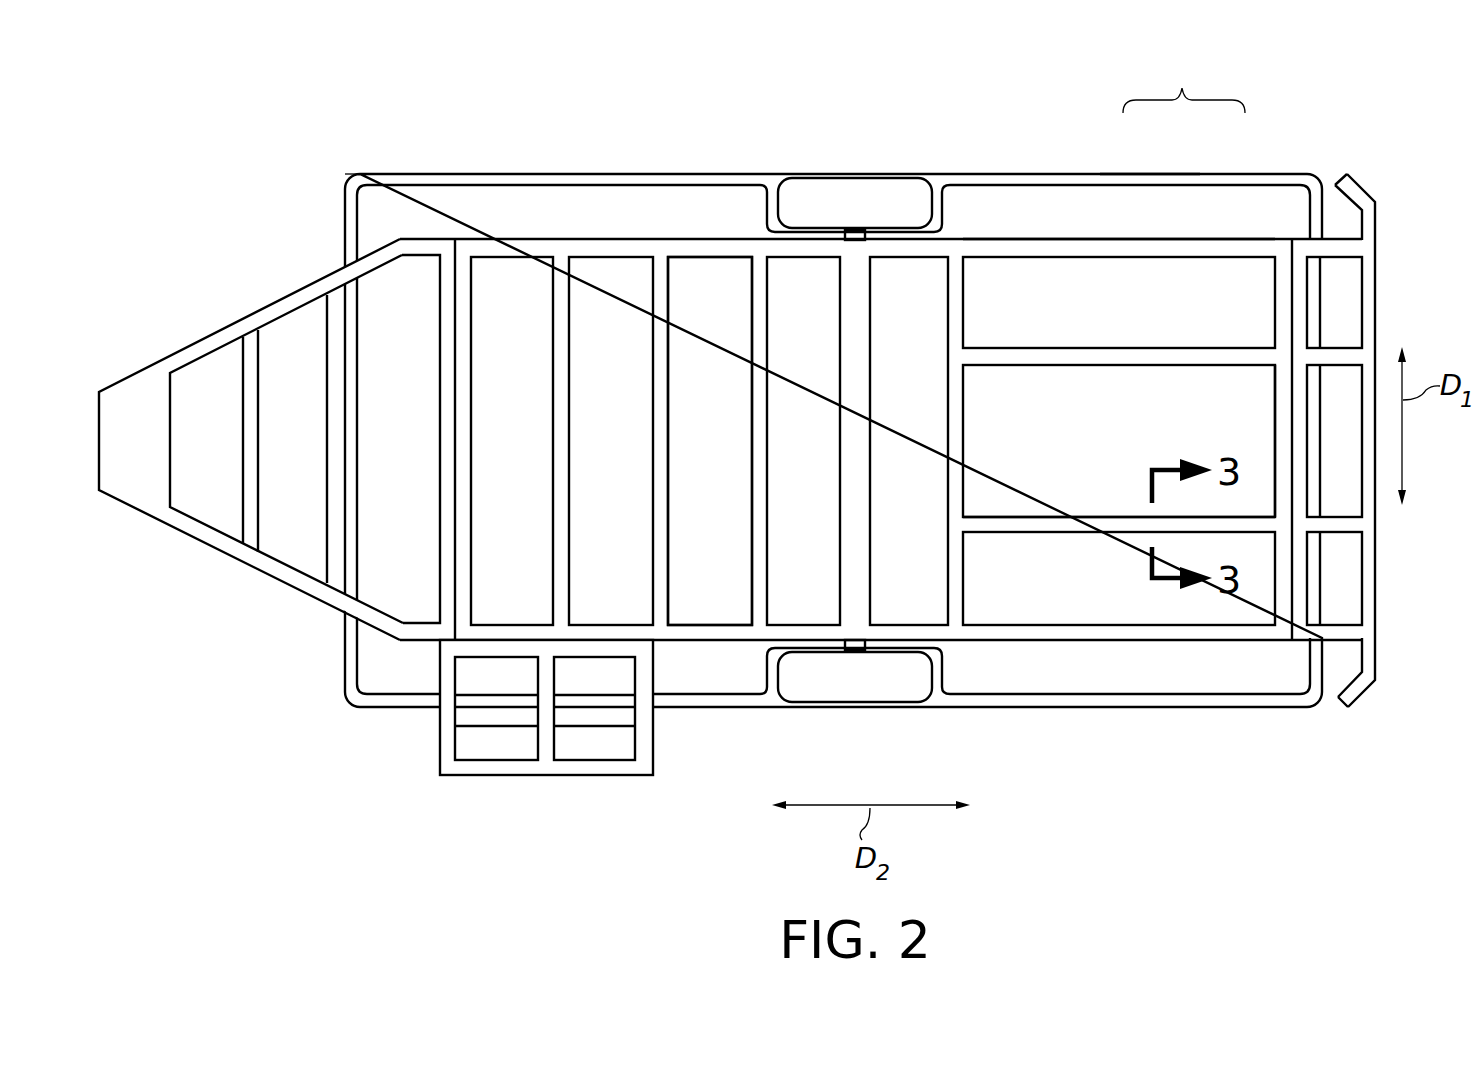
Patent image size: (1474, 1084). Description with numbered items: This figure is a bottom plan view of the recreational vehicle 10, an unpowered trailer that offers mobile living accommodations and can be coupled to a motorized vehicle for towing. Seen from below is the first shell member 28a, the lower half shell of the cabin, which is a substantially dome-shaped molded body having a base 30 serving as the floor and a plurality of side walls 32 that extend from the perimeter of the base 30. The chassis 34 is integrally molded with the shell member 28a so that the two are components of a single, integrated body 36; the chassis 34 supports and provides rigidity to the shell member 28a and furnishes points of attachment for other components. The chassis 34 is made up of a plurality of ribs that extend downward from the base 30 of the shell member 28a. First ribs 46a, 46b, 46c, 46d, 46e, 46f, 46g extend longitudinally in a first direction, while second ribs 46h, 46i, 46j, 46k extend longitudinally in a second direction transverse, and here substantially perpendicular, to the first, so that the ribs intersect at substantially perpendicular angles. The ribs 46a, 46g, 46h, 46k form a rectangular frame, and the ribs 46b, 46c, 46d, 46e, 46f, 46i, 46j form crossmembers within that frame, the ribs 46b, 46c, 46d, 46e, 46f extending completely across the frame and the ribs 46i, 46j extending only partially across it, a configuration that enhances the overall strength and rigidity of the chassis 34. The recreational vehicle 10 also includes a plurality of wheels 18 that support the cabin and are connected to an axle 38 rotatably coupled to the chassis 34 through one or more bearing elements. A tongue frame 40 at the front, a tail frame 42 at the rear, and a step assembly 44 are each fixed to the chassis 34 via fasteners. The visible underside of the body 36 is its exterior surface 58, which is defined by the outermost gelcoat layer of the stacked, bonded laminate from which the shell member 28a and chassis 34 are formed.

The recreational vehicle 10 is at (325, 125).
The wheels 18 is at (890, 190).
The first shell member 28a is at (1148, 173).
The base 30 is at (833, 444).
The side walls 32 is at (491, 178).
The chassis 34 is at (1173, 239).
The integrated body 36 is at (1184, 84).
The axle 38 is at (857, 231).
The tongue frame 40 is at (205, 338).
The tail frame 42 is at (1380, 290).
The step assembly 44 is at (593, 776).
The first rib 46a is at (475, 400).
The first rib 46b is at (572, 410).
The first rib 46c is at (673, 456).
The first rib 46d is at (772, 380).
The first rib 46e is at (872, 408).
The first rib 46f is at (965, 414).
The first rib 46g is at (1275, 413).
The second rib 46h is at (1048, 624).
The second rib 46i is at (1037, 518).
The second rib 46j is at (1065, 348).
The second rib 46k is at (1005, 238).
The exterior surface 58 is at (710, 441).